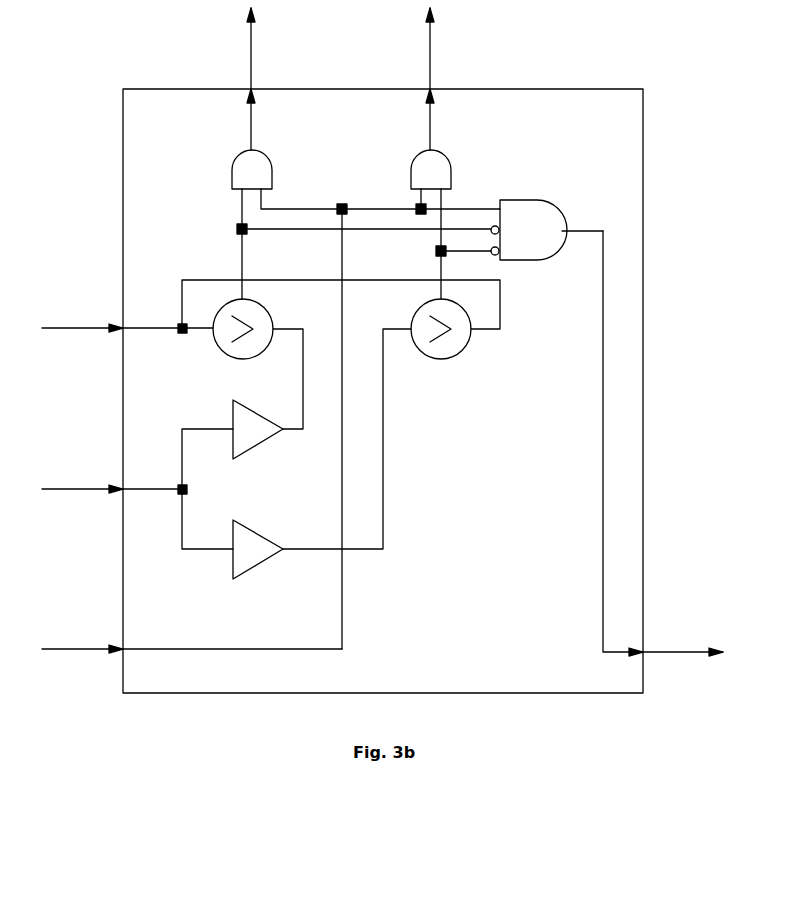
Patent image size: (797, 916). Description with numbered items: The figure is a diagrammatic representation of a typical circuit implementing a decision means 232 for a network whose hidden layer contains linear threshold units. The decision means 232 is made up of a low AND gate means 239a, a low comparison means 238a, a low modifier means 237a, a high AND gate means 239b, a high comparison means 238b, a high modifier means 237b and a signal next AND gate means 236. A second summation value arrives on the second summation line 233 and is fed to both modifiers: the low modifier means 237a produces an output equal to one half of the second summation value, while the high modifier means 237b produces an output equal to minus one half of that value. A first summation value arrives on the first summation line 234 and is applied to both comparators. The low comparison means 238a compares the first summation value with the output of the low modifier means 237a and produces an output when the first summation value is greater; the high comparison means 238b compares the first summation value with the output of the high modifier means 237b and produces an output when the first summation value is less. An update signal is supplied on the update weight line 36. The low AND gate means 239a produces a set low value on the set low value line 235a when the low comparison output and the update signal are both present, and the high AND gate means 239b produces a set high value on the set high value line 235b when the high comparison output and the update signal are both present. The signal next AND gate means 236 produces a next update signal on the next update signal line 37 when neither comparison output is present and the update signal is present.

The decision means 232 is at (188, 709).
The second summation line 233 is at (85, 492).
The first summation line 234 is at (83, 326).
The set low value line 235a is at (252, 46).
The set high value line 235b is at (431, 50).
The signal next AND gate means 236 is at (543, 262).
The low modifier means 237a is at (258, 441).
The high modifier means 237b is at (255, 565).
The low comparison means 238a is at (214, 338).
The high comparison means 238b is at (442, 360).
The low AND gate means 239a is at (232, 166).
The high AND gate means 239b is at (452, 170).
The update weight line 36 is at (82, 652).
The next update signal line 37 is at (686, 650).